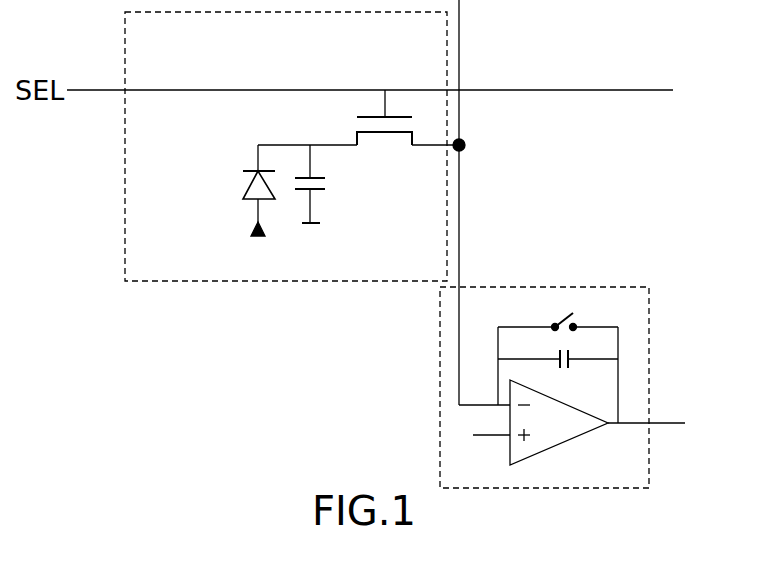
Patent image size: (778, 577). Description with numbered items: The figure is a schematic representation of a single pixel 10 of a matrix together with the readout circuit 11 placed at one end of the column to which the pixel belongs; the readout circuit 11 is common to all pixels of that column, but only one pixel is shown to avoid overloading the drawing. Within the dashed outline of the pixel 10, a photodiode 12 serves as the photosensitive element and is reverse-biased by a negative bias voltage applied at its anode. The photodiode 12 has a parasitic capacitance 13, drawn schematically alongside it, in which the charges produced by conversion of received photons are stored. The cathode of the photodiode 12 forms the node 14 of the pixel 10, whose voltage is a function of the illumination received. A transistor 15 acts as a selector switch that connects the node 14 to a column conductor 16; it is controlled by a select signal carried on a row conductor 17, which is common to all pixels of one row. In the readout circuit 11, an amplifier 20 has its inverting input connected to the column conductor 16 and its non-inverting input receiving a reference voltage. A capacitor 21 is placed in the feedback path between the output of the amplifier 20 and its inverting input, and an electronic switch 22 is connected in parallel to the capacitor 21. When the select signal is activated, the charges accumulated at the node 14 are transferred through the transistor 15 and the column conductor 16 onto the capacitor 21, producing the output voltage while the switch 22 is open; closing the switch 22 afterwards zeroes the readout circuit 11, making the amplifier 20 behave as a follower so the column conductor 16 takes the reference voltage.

The pixel 10 is at (188, 282).
The readout circuit 11 is at (438, 378).
The photodiode 12 is at (245, 191).
The parasitic capacitance 13 is at (327, 183).
The node 14 is at (288, 144).
The transistor 15 is at (393, 133).
The column conductor 16 is at (460, 215).
The row conductor 17 is at (505, 90).
The amplifier 20 is at (568, 437).
The capacitor 21 is at (565, 370).
The electronic switch 22 is at (577, 317).